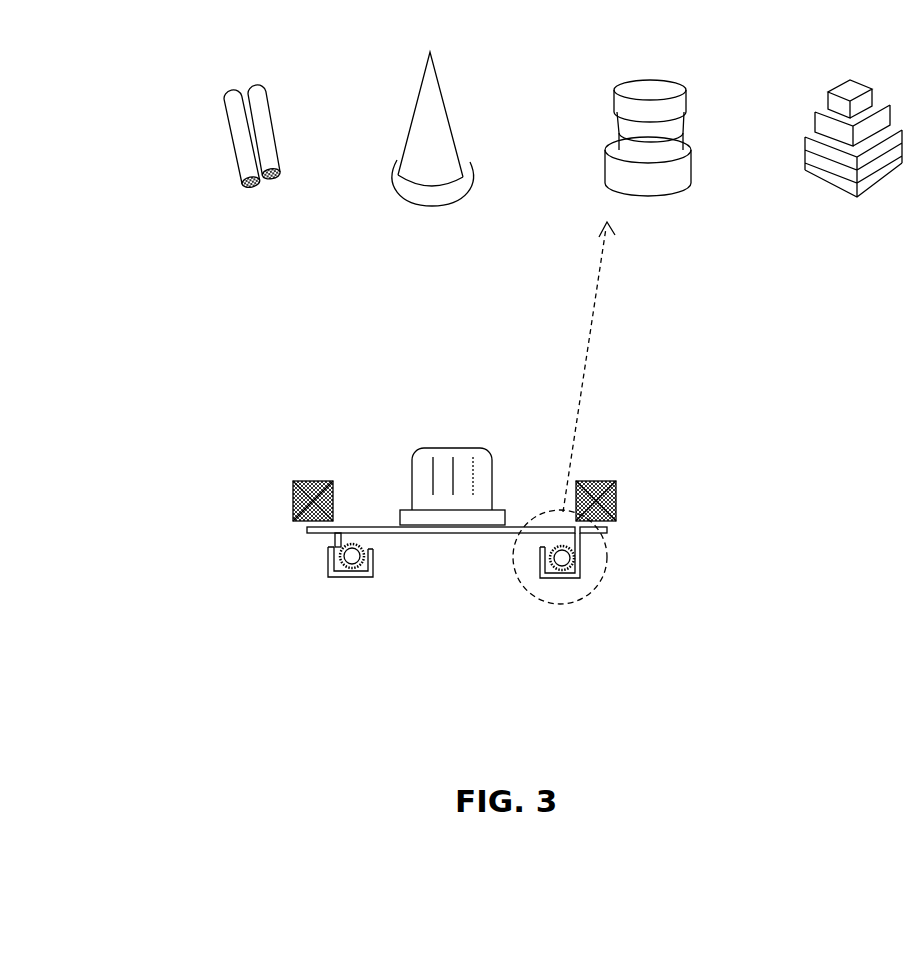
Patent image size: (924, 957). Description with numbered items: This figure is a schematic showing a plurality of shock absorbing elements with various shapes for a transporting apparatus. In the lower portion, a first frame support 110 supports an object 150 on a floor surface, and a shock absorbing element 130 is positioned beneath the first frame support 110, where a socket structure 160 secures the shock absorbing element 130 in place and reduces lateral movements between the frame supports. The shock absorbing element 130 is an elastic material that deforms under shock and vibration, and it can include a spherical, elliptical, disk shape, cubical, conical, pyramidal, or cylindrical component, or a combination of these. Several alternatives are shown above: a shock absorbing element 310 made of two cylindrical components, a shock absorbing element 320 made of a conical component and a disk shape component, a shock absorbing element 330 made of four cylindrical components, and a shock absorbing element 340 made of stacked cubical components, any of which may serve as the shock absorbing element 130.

The first frame support 110 is at (437, 530).
The shock absorbing element 130 is at (566, 556).
The object 150 is at (448, 455).
The socket structure 160 is at (576, 572).
The shock absorbing element 310 is at (228, 160).
The shock absorbing element 320 is at (424, 120).
The shock absorbing element 330 is at (612, 152).
The shock absorbing element 340 is at (868, 86).